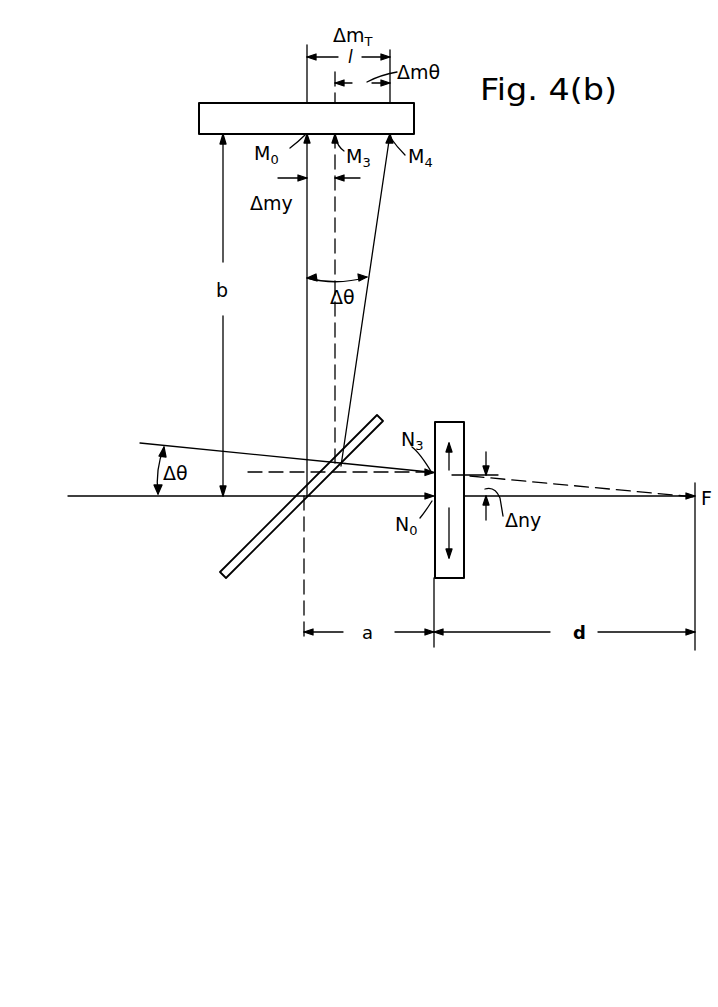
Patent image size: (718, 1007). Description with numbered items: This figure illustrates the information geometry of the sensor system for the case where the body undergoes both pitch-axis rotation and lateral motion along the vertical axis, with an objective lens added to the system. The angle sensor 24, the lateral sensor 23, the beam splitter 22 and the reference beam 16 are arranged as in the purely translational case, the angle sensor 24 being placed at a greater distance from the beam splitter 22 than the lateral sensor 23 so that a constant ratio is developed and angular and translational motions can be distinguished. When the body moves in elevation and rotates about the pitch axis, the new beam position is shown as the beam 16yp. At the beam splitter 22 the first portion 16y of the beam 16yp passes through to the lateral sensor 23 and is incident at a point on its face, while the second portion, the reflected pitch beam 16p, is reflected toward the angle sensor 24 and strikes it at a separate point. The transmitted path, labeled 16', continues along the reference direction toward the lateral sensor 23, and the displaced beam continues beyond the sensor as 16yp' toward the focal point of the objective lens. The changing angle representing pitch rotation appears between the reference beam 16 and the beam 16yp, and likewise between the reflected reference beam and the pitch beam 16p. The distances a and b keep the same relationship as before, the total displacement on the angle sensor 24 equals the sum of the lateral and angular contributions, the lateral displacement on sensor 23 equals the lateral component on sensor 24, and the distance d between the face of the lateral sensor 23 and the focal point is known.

The angle sensor 24 is at (203, 120).
The beam splitter 22 is at (246, 555).
The lateral sensor 23 is at (458, 558).
The reference beam 16 is at (189, 511).
The beam portion toward lateral sensor 16' is at (372, 514).
The first beam portion 16y is at (389, 459).
The reflected pitch beam 16p is at (373, 265).
The displaced beam 16yp is at (242, 437).
The transmitted displaced beam to focal point 16yp' is at (573, 474).